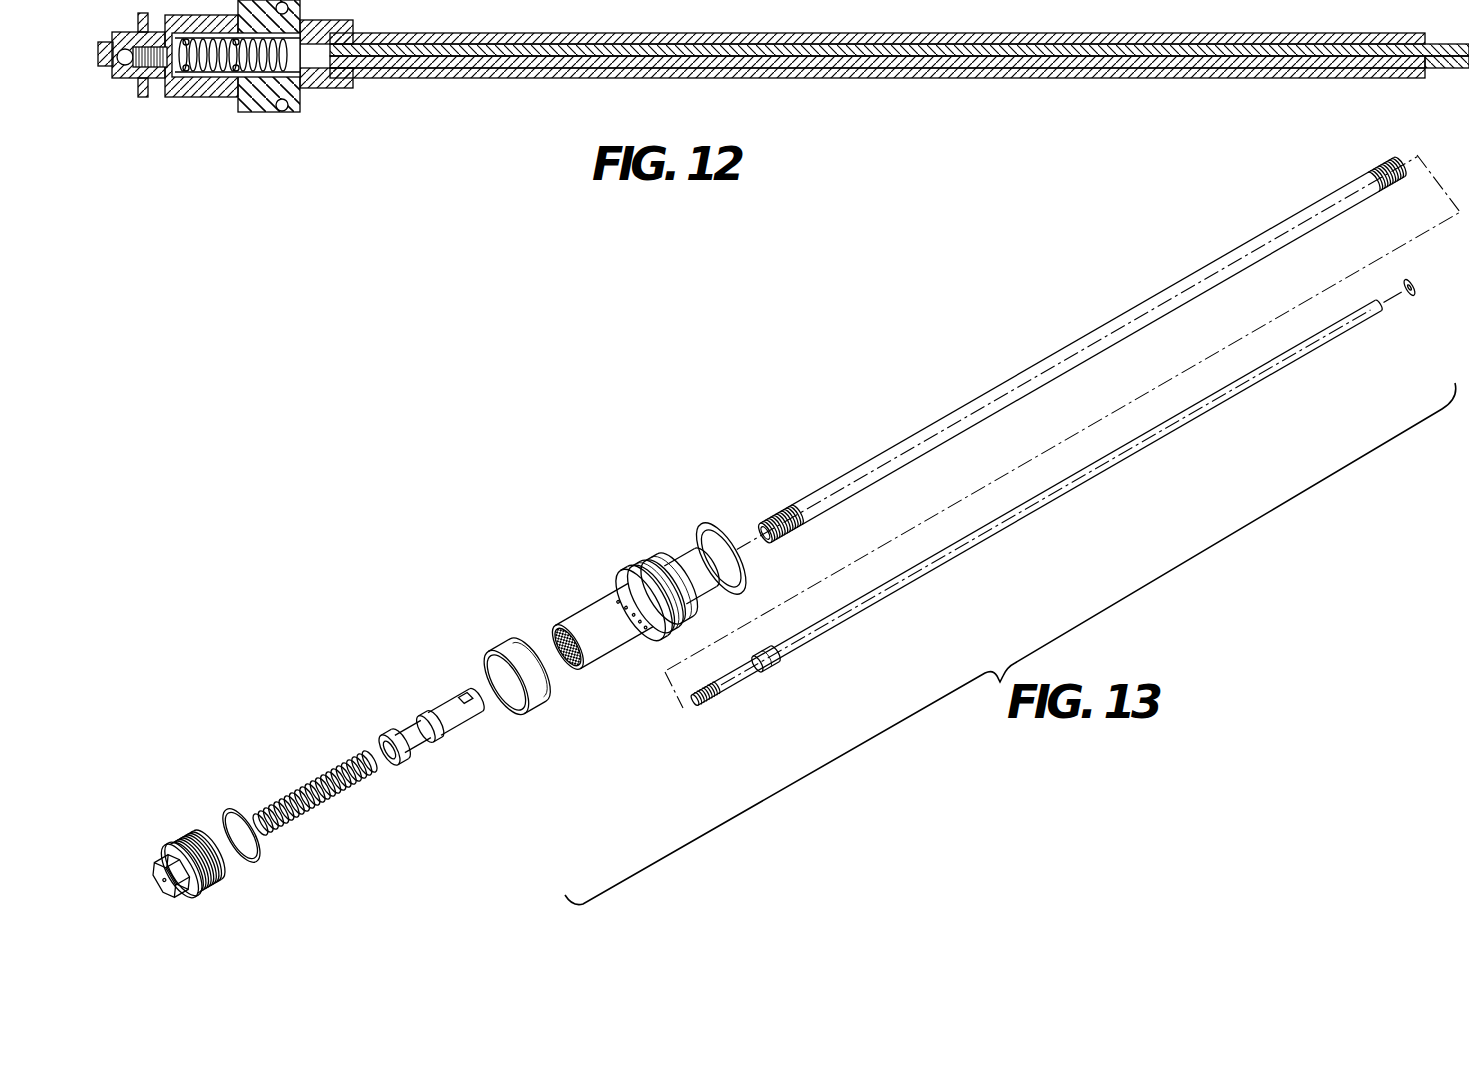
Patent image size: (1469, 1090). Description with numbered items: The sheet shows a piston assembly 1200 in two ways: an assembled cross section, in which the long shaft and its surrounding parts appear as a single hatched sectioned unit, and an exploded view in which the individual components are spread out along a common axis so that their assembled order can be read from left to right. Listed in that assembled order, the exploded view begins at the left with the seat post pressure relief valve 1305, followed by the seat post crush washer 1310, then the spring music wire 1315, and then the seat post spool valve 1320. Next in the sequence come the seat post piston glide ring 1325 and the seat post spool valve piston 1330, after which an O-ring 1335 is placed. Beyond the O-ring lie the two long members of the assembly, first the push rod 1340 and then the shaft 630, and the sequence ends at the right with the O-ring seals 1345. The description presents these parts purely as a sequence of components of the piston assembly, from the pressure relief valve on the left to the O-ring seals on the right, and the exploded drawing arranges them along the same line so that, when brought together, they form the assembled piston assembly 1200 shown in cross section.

In FIG. 12, the piston assembly 1200 is at (896, 91).
In FIG. 13, the seat post pressure relief valve 1305 is at (190, 840).
In FIG. 13, the seat post crush washer 1310 is at (228, 812).
In FIG. 13, the spring music wire 1315 is at (328, 773).
In FIG. 13, the seat post spool valve 1320 is at (408, 722).
In FIG. 13, the seat post piston glide ring 1325 is at (497, 645).
In FIG. 13, the seat post spool valve piston 1330 is at (592, 603).
In FIG. 13, the O-ring 1335 is at (705, 522).
In FIG. 13, the push rod 1340 is at (948, 404).
In FIG. 13, the O-ring seals 1345 is at (1416, 292).
In FIG. 13, the shaft 630 is at (1277, 375).